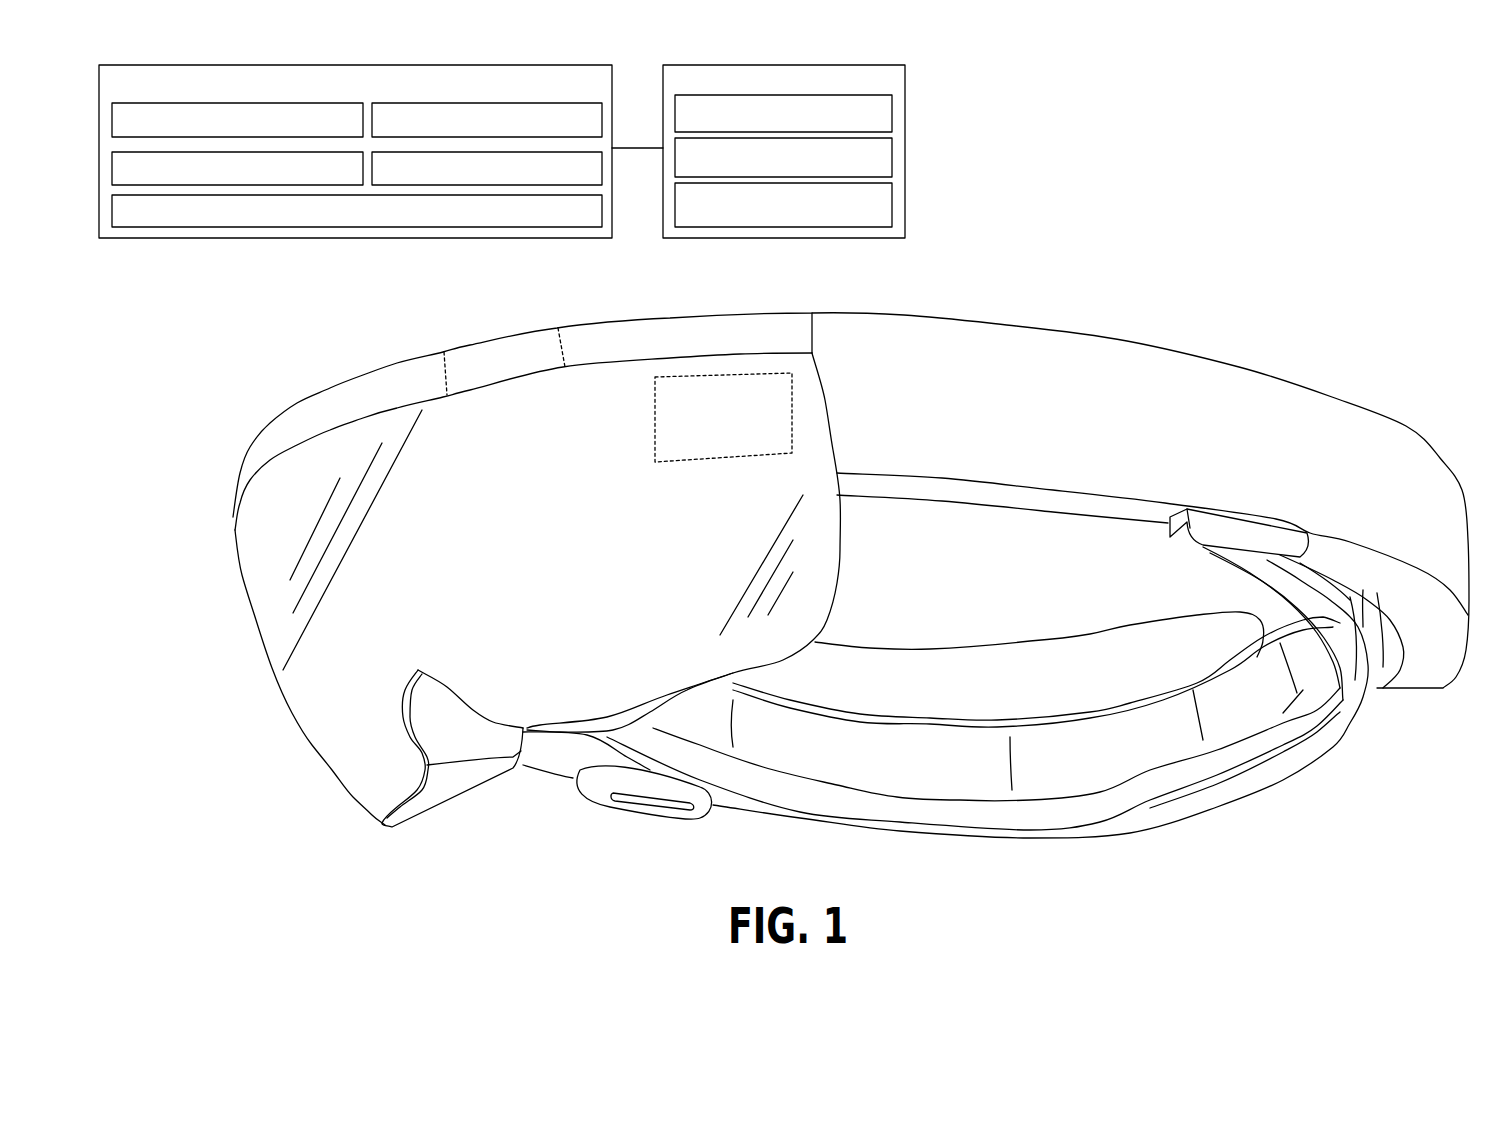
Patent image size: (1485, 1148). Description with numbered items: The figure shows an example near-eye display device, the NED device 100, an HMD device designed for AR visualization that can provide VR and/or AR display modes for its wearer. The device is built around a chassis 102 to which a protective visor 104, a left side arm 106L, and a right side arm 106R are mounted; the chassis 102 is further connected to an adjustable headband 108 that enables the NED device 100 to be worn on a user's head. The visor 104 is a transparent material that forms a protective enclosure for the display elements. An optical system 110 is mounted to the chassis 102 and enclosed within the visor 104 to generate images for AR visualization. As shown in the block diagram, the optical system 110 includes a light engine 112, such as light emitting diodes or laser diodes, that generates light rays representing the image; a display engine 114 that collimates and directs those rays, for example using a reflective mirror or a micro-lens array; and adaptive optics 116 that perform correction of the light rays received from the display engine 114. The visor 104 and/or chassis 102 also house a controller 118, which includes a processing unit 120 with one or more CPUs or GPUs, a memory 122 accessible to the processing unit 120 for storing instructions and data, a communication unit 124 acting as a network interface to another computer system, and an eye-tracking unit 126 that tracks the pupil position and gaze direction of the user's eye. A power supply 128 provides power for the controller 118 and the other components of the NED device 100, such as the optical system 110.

The NED device 100 is at (1104, 124).
The chassis 102 is at (366, 376).
The protective visor 104 is at (327, 770).
The left side arm 106L is at (1354, 412).
The right side arm 106R is at (1033, 640).
The adjustable headband 108 is at (1305, 771).
The optical system 110 is at (655, 377).
The light engine 112 is at (783, 113).
The display engine 114 is at (783, 157).
The adaptive optics 116 is at (783, 205).
The controller 118 is at (100, 238).
The processing unit 120 is at (237, 120).
The memory 122 is at (237, 168).
The communication unit 124 is at (487, 120).
The eye-tracking unit 126 is at (487, 168).
The power supply 128 is at (357, 211).